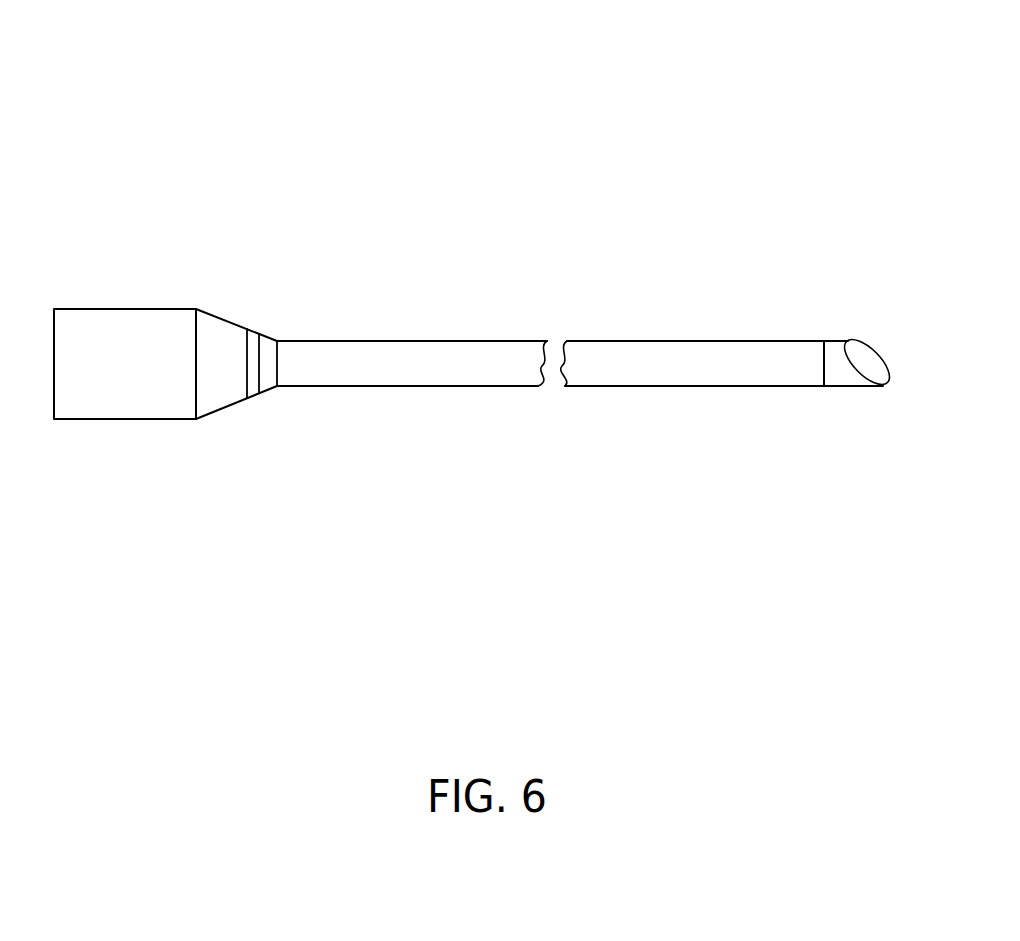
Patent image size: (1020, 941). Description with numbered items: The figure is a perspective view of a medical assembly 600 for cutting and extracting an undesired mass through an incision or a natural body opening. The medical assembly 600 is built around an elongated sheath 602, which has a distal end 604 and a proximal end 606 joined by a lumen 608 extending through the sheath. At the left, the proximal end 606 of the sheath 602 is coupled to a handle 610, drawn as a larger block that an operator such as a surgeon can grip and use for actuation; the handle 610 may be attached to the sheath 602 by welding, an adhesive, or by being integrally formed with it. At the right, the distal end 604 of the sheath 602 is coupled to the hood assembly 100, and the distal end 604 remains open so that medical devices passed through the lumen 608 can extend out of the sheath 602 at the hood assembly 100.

The medical assembly 600 is at (545, 112).
The handle 610 is at (125, 309).
The proximal end 606 is at (277, 386).
The sheath 602 is at (361, 341).
The lumen 608 is at (524, 368).
The distal end 604 is at (822, 388).
The hood assembly 100 is at (848, 340).